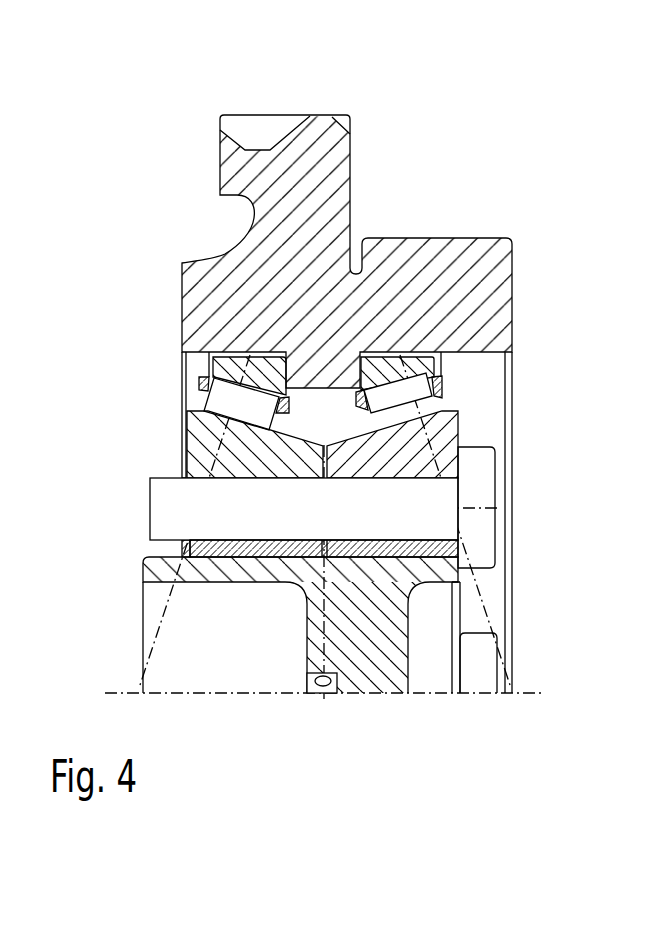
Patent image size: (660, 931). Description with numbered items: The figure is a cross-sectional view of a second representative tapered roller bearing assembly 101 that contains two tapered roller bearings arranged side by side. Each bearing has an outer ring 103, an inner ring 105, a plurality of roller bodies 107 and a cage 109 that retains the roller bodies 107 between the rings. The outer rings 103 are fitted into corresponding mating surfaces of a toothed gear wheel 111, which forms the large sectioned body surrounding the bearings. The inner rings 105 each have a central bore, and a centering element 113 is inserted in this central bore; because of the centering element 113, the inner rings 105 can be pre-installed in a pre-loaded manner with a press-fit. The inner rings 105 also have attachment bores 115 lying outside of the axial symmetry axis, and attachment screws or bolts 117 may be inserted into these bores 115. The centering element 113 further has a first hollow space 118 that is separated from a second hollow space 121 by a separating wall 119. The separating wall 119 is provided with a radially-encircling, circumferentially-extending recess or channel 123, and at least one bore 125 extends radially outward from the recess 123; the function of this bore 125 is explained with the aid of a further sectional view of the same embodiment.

The tapered roller bearing assembly 101 is at (132, 190).
The outer ring 103 is at (213, 357).
The inner ring 105 is at (200, 443).
The roller bodies 107 is at (358, 406).
The cage 109 is at (200, 381).
The toothed gear wheel 111 is at (420, 250).
The centering element 113 is at (183, 573).
The attachment bores 115 is at (172, 471).
The attachment screws or bolts 117 is at (472, 497).
The first hollow space 118 is at (190, 663).
The separating wall 119 is at (380, 653).
The second hollow space 121 is at (432, 638).
The recess or channel 123 is at (316, 696).
The bore 125 is at (327, 696).